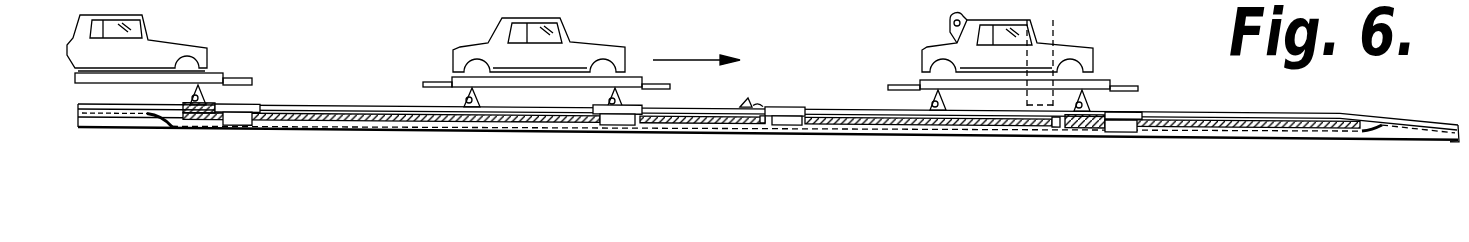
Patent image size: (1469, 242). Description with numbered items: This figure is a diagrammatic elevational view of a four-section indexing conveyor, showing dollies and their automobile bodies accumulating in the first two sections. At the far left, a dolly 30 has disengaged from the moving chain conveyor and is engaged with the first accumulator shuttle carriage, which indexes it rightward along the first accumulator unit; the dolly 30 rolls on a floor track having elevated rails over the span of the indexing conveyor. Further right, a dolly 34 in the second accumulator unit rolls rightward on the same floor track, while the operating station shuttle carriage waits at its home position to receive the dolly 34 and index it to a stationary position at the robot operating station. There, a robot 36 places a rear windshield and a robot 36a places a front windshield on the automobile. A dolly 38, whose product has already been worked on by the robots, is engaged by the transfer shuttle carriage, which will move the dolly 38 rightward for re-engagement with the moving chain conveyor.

The dolly 30 is at (223, 77).
The dolly 34 is at (644, 78).
The robot 36 is at (953, 33).
The robot 36a is at (1053, 32).
The dolly 38 is at (1023, 62).